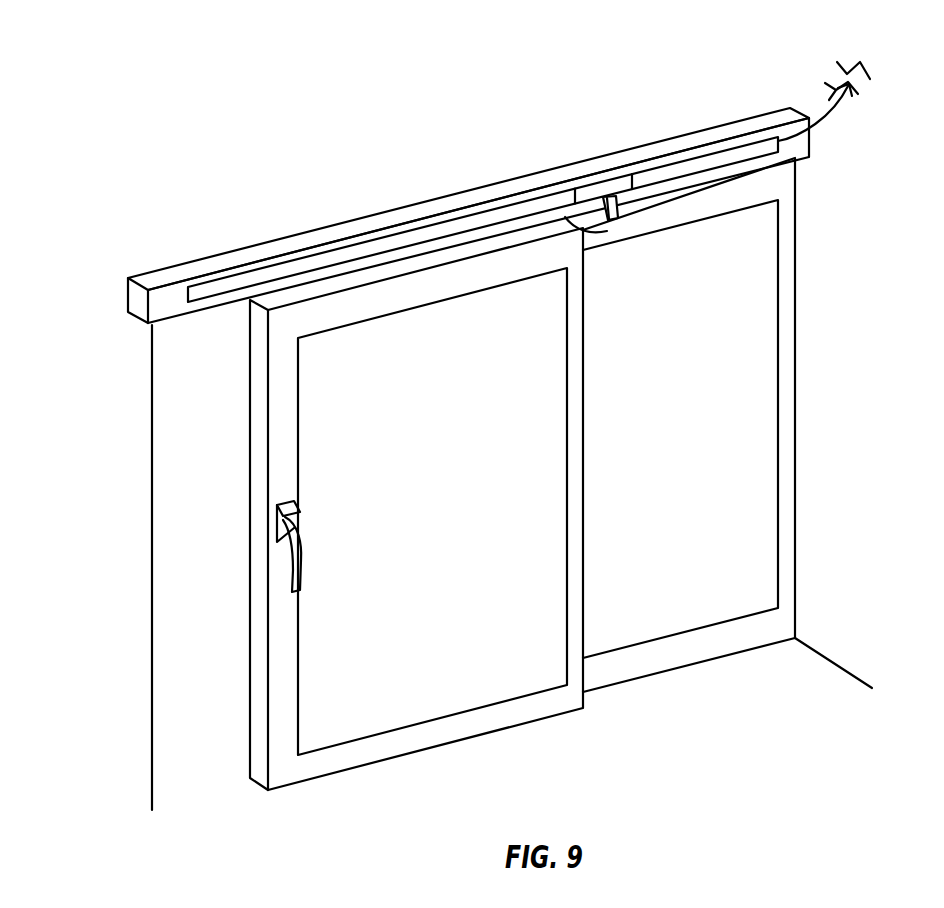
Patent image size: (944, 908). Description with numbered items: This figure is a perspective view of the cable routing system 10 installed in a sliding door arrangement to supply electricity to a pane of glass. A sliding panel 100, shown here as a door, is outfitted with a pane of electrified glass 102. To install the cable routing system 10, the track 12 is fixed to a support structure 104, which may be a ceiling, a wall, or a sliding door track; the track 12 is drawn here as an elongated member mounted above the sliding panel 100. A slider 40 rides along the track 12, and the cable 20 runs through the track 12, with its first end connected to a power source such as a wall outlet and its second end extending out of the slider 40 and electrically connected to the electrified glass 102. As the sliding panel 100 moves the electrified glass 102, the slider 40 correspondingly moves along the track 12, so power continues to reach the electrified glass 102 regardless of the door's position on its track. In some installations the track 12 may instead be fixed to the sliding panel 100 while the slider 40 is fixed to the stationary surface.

The cable routing system 10 is at (642, 152).
The track 12 is at (753, 145).
The cable 20 is at (607, 231).
The slider 40 is at (602, 192).
The sliding panel 100 is at (278, 463).
The electrified glass 102 is at (463, 679).
The support structure 104 is at (140, 300).